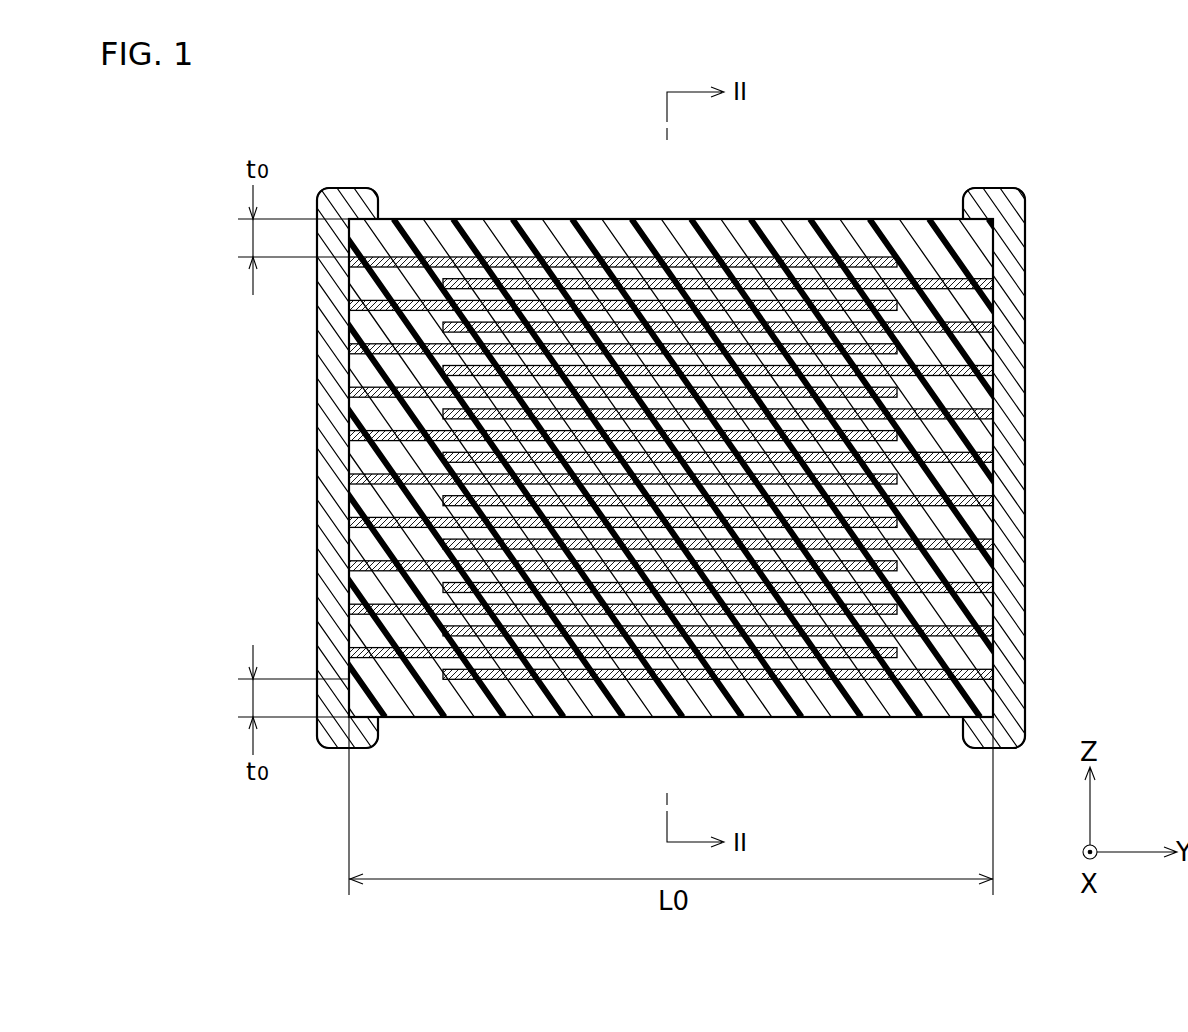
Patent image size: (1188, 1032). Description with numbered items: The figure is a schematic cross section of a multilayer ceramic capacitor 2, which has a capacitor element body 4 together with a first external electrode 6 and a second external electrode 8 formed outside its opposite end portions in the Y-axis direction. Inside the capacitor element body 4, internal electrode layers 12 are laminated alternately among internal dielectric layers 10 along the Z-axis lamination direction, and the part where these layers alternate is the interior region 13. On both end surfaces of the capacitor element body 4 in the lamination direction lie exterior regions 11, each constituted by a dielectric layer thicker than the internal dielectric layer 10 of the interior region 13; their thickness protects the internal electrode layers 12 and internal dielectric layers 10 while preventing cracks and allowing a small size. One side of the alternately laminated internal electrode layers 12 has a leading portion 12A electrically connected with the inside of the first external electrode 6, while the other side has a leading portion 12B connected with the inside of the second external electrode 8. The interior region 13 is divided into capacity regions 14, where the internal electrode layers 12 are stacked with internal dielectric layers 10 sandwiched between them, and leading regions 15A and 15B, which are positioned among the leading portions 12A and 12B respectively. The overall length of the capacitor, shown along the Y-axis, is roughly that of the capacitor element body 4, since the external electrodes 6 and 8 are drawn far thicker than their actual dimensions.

The multilayer ceramic capacitor 2 is at (543, 760).
The capacitor element body 4 is at (835, 718).
The first external electrode 6 is at (335, 568).
The second external electrode 8 is at (995, 195).
The internal dielectric layer 10 is at (614, 274).
The exterior region 11 is at (540, 243).
The internal electrode layer 12 is at (712, 262).
The leading portion 12A is at (412, 247).
The leading portion 12B is at (922, 317).
The interior region 13 is at (1037, 255).
The capacity region 14 is at (800, 275).
The leading region 15A is at (376, 283).
The leading region 15B is at (963, 307).